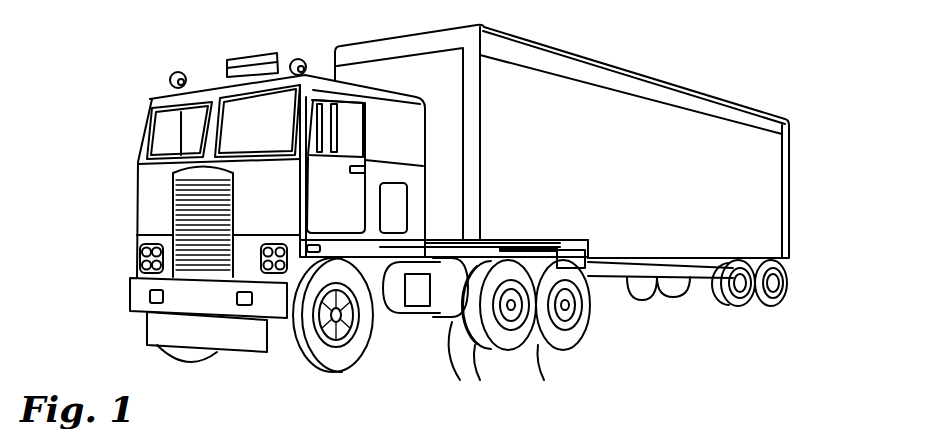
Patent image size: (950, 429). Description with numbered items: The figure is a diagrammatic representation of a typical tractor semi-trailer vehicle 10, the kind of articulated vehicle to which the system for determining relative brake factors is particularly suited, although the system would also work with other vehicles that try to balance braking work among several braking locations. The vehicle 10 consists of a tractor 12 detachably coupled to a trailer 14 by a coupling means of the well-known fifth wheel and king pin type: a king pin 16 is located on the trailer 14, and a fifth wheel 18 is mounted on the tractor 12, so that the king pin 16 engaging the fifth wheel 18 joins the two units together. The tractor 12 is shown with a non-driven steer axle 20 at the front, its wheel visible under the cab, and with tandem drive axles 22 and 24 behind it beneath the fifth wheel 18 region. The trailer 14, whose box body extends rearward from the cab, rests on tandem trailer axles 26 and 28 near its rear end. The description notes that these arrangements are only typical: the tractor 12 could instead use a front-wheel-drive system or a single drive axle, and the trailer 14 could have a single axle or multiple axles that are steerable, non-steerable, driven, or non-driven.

The tractor semi-trailer vehicle 10 is at (716, 72).
The tractor 12 is at (198, 64).
The trailer 14 is at (746, 142).
The king pin 16 is at (550, 218).
The fifth wheel 18 is at (505, 256).
The steer axle 20 is at (297, 368).
The drive axle 22 is at (480, 350).
The drive axle 24 is at (550, 345).
The trailer axle 26 is at (718, 303).
The trailer axle 28 is at (755, 307).